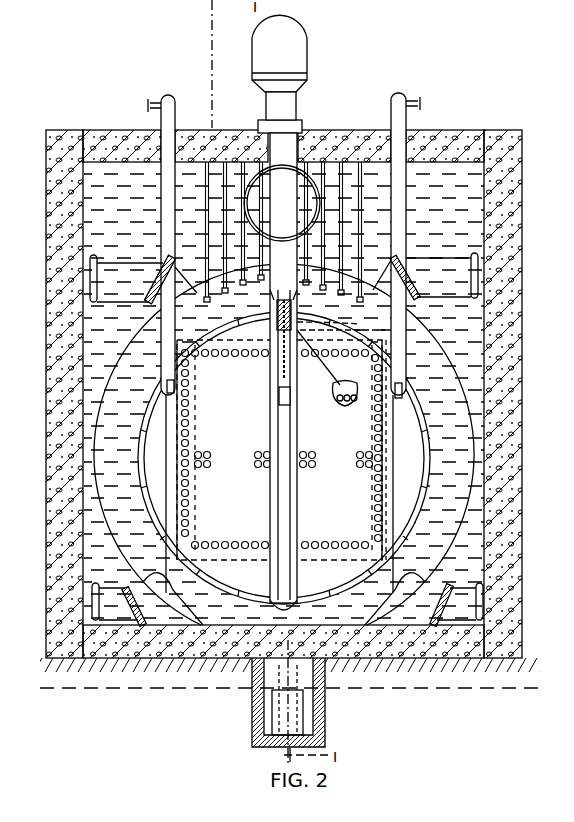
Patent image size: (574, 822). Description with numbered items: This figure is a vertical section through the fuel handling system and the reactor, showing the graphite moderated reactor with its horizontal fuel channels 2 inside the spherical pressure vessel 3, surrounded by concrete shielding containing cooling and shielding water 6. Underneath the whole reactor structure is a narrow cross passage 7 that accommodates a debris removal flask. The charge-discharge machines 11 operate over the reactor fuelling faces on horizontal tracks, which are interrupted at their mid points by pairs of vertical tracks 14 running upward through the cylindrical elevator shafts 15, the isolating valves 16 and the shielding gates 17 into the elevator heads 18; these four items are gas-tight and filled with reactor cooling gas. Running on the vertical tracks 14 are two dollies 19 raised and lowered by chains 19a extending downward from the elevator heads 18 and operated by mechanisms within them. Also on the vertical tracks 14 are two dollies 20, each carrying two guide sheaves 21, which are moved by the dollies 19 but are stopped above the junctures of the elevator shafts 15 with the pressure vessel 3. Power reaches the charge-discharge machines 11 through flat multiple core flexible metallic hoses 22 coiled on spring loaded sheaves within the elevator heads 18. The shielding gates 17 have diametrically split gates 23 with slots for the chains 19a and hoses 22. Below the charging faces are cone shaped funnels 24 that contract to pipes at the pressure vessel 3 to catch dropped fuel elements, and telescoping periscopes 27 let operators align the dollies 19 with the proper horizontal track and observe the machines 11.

The horizontal fuel channels 2 is at (384, 428).
The spherical pressure vessel 3 is at (232, 321).
The cooling and shielding water 6 is at (478, 503).
The narrow cross passage 7 is at (297, 712).
The charge-discharge machines 11 is at (392, 358).
The vertical tracks 14 is at (297, 308).
The cylindrical elevator shafts 15 is at (300, 246).
The isolating valves 16 is at (322, 216).
The shielding gates 17 is at (306, 126).
The elevator heads 18 is at (297, 42).
The dollies 19 is at (279, 398).
The chains 19a is at (280, 372).
The dollies 20 is at (298, 318).
The guide sheaves 21 is at (300, 323).
The flat multiple core flexible metallic hoses 22 is at (386, 332).
The diametrically split gates 23 is at (258, 127).
The cone shaped funnels 24 is at (433, 576).
The telescoping periscopes 27 is at (148, 104).